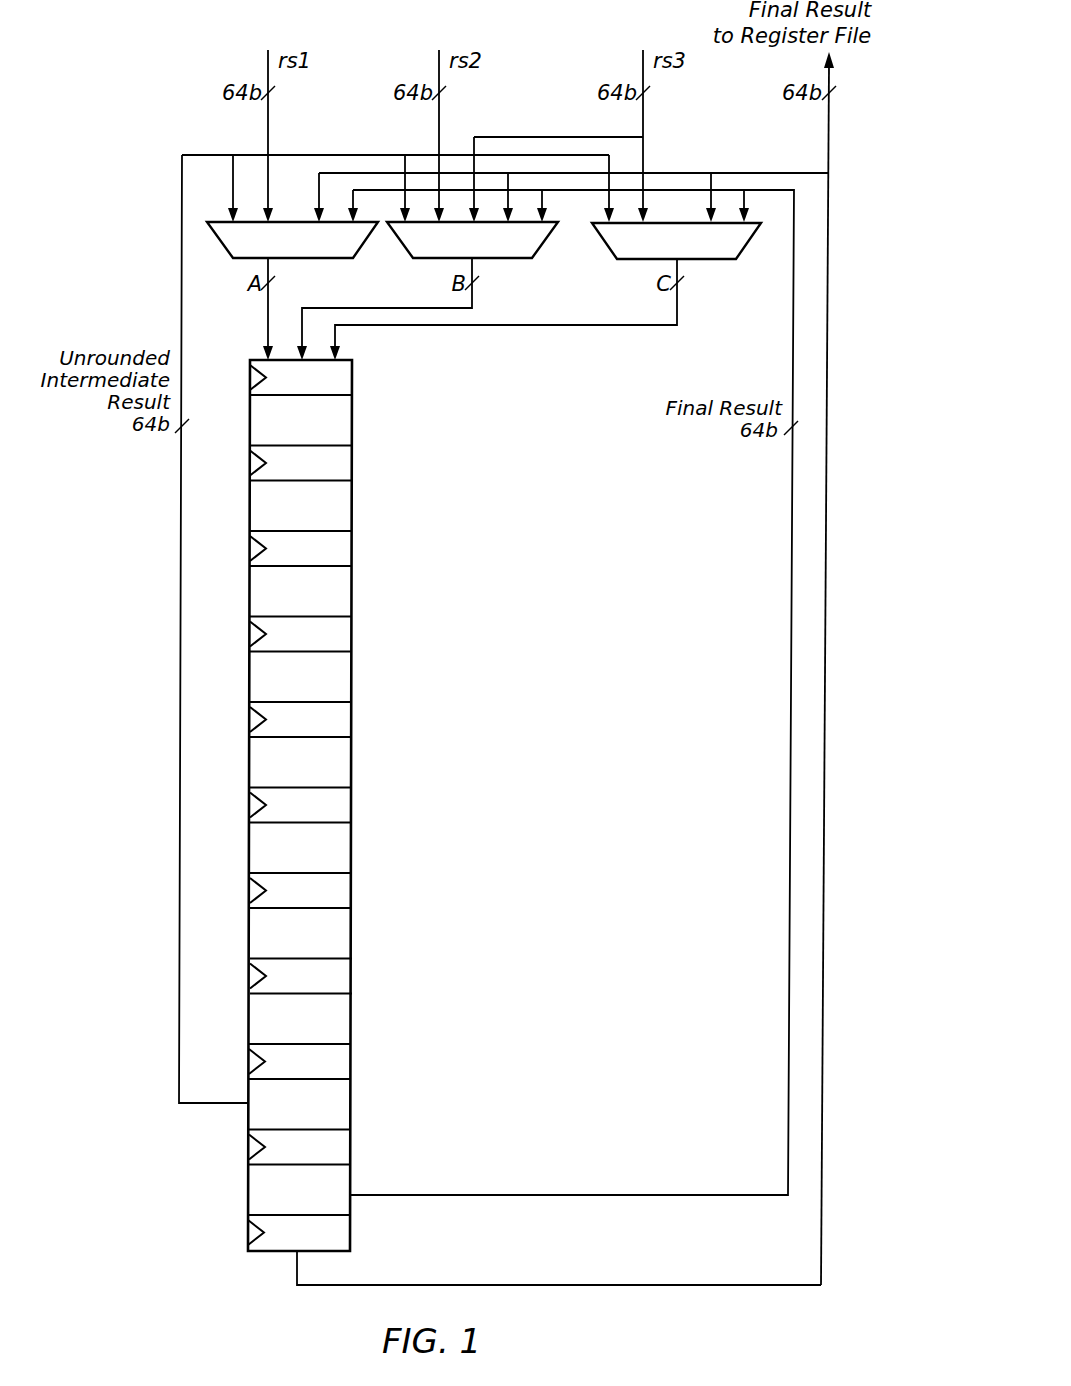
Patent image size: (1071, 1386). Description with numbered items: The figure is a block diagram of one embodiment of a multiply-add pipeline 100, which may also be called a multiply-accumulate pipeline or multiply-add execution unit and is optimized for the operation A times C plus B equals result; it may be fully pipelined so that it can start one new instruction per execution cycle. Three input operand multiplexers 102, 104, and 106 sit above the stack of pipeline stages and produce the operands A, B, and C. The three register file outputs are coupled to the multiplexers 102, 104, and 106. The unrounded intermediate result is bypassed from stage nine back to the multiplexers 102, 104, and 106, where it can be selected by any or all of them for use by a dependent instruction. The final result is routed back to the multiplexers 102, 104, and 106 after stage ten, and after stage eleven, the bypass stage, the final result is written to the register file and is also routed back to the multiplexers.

The multiply-add pipeline 100 is at (353, 588).
The input operand multiplexer 102 is at (333, 258).
The input operand multiplexer 104 is at (505, 258).
The input operand multiplexer 106 is at (708, 259).